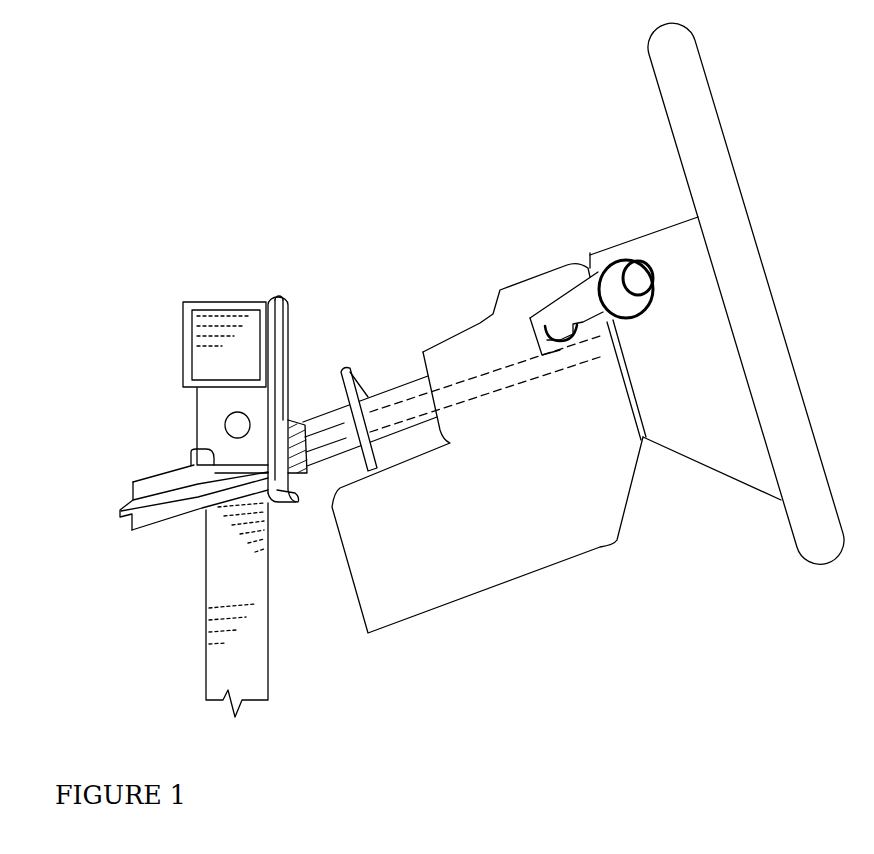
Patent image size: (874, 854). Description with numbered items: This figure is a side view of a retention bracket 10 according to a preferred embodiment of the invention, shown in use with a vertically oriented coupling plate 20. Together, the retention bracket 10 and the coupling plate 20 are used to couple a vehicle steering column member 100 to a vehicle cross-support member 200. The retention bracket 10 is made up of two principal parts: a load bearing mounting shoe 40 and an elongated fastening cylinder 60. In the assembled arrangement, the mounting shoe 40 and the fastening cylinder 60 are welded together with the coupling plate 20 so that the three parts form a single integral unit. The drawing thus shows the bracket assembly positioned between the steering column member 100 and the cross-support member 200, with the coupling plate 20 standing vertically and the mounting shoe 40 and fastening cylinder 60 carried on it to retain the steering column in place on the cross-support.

The retention bracket 10 is at (197, 435).
The coupling plate 20 is at (283, 293).
The load bearing mounting shoe 40 is at (213, 417).
The elongated fastening cylinder 60 is at (212, 463).
The vehicle steering column member 100 is at (489, 372).
The vehicle cross-support member 200 is at (223, 332).